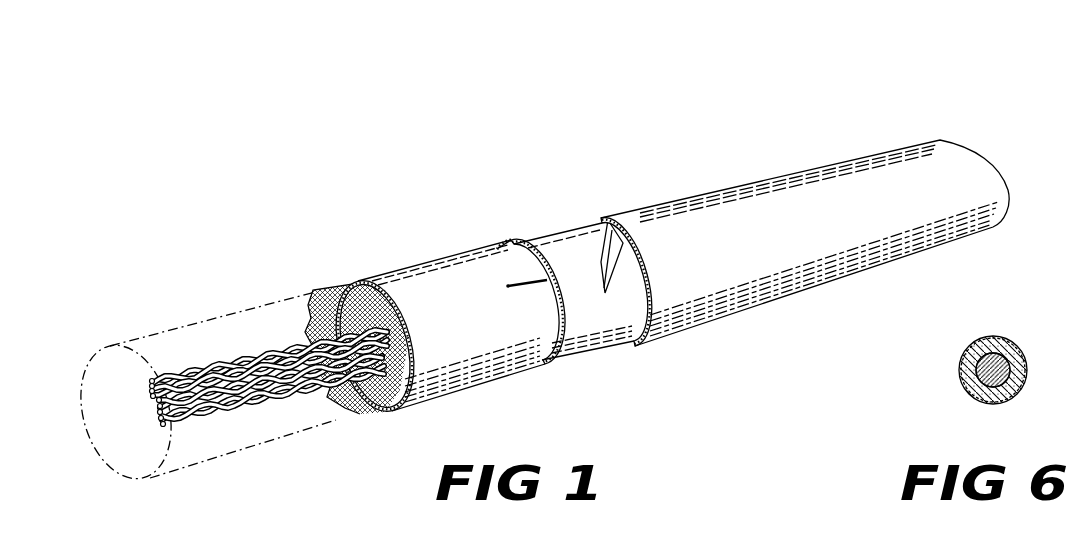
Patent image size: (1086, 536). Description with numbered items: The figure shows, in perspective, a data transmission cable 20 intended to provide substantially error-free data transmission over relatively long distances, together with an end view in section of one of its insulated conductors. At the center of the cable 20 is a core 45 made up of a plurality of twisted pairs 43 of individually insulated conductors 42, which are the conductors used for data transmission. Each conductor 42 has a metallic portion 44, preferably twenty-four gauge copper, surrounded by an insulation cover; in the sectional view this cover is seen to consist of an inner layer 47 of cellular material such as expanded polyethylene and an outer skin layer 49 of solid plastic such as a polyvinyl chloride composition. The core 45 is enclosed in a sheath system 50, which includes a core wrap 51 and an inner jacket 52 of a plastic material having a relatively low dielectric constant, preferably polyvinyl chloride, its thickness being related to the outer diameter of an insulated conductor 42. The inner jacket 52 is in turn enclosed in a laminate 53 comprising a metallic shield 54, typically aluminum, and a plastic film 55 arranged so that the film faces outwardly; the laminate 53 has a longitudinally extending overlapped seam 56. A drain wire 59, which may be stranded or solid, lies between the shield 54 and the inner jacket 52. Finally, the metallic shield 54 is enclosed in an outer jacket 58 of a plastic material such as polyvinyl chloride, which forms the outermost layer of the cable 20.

In FIG. 1, the data transmission cable 20 is at (546, 150).
In FIG. 1, the individually insulated conductor 42 is at (285, 393).
In FIG. 1, the twisted pair 43 is at (256, 411).
In FIG. 6, the metallic portion 44 is at (1012, 346).
In FIG. 1, the core 45 is at (196, 337).
In FIG. 6, the inner layer 47 is at (978, 346).
In FIG. 6, the outer skin layer 49 is at (963, 379).
In FIG. 1, the sheath system 50 is at (525, 376).
In FIG. 1, the core wrap 51 is at (345, 290).
In FIG. 1, the inner jacket 52 is at (400, 270).
In FIG. 1, the laminate 53 is at (548, 224).
In FIG. 1, the metallic shield 54 is at (554, 286).
In FIG. 1, the plastic film 55 is at (572, 348).
In FIG. 1, the overlapped seam 56 is at (521, 249).
In FIG. 1, the outer jacket 58 is at (664, 201).
In FIG. 1, the drain wire 59 is at (533, 288).